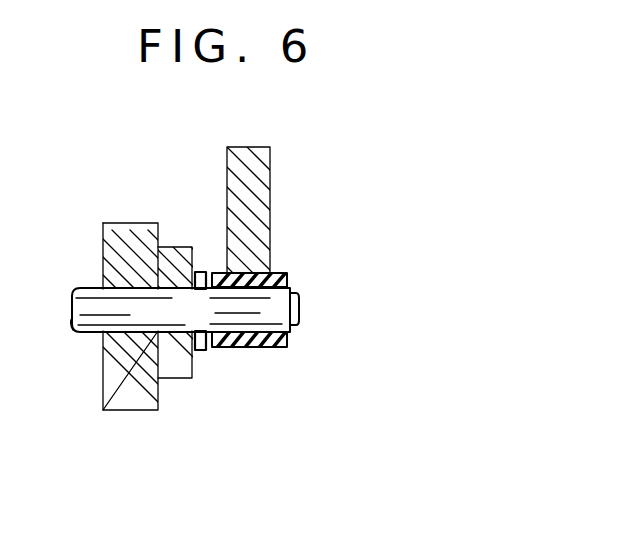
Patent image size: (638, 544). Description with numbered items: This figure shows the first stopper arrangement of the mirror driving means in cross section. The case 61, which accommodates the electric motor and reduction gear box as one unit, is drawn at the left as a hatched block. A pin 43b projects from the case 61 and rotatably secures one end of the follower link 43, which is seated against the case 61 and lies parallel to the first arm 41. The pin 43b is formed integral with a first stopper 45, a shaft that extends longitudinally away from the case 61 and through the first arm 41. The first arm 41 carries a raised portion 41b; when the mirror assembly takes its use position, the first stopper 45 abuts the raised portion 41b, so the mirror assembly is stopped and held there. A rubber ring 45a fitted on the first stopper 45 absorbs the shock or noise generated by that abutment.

The first arm 41 is at (250, 172).
The raised portion 41b is at (287, 275).
The follower link 43 is at (175, 253).
The pin 43b is at (198, 351).
The first stopper 45 is at (272, 309).
The rubber ring 45a is at (271, 348).
The case 61 is at (133, 380).